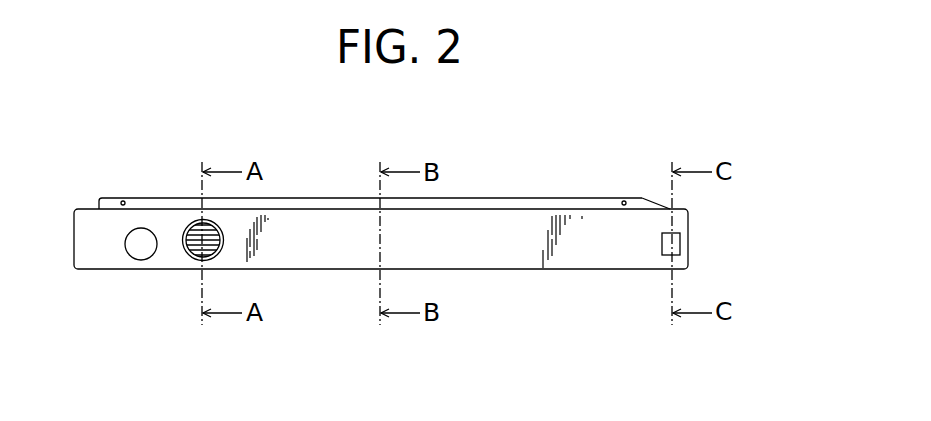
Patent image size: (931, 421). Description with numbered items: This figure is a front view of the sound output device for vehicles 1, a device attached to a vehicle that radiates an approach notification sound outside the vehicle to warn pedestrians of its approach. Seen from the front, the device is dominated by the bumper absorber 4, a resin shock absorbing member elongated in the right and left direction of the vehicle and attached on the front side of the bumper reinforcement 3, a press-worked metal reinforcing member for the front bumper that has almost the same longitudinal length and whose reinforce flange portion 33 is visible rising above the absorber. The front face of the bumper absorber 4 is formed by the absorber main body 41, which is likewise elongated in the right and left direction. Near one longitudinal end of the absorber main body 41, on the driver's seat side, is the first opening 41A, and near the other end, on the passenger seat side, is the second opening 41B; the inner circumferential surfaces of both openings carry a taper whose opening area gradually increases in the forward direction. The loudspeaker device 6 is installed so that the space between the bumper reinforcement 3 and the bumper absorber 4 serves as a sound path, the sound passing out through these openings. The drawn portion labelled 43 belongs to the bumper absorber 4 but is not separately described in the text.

The sound output device for vehicles 1 is at (714, 202).
The bumper reinforcement 3 is at (531, 195).
The bumper absorber 4 is at (690, 238).
The loudspeaker device 6 is at (208, 240).
The reinforce flange portion 33 is at (493, 203).
The absorber main body 41 is at (314, 237).
The first opening 41A is at (190, 231).
The second opening 41B is at (675, 248).
The plate end portion 43 is at (638, 219).